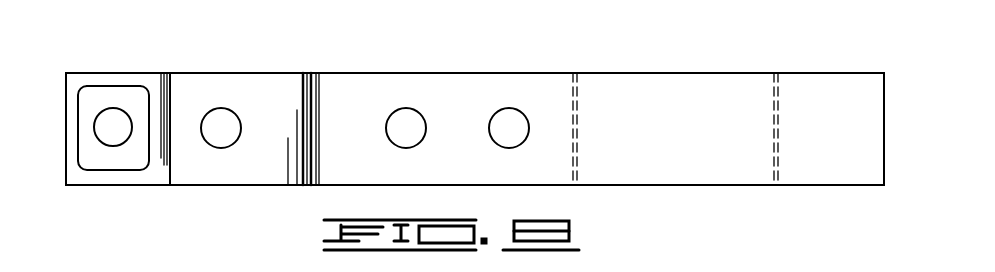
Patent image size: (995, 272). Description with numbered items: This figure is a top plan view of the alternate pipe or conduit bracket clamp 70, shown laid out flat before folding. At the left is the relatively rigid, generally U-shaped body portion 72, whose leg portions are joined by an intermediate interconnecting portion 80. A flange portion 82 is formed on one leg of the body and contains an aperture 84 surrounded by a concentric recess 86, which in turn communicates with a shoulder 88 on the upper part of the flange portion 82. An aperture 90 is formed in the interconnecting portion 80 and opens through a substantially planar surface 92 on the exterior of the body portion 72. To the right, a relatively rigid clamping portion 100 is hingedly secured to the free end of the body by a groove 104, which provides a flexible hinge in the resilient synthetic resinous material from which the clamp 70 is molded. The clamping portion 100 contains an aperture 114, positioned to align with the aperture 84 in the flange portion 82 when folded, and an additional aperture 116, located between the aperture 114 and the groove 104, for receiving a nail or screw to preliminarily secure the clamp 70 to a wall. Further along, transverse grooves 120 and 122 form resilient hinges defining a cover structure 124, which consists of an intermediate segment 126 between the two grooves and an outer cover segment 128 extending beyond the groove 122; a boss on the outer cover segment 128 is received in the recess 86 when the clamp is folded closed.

The pipe or conduit bracket clamp 70 is at (318, 42).
The body portion 72 is at (255, 97).
The interconnecting portion 80 is at (233, 87).
The flange portion 82 is at (95, 175).
The aperture 84 is at (97, 118).
The concentric recess 86 is at (85, 144).
The shoulder 88 is at (103, 78).
The aperture 90 is at (208, 115).
The planar surface 92 is at (212, 80).
The clamping portion 100 is at (457, 82).
The groove 104 is at (310, 108).
The aperture 114 is at (508, 108).
The aperture 116 is at (407, 110).
The transverse groove 120 is at (576, 110).
The transverse groove 122 is at (777, 105).
The cover structure 124 is at (677, 88).
The intermediate segment 126 is at (636, 80).
The outer cover segment 128 is at (832, 88).